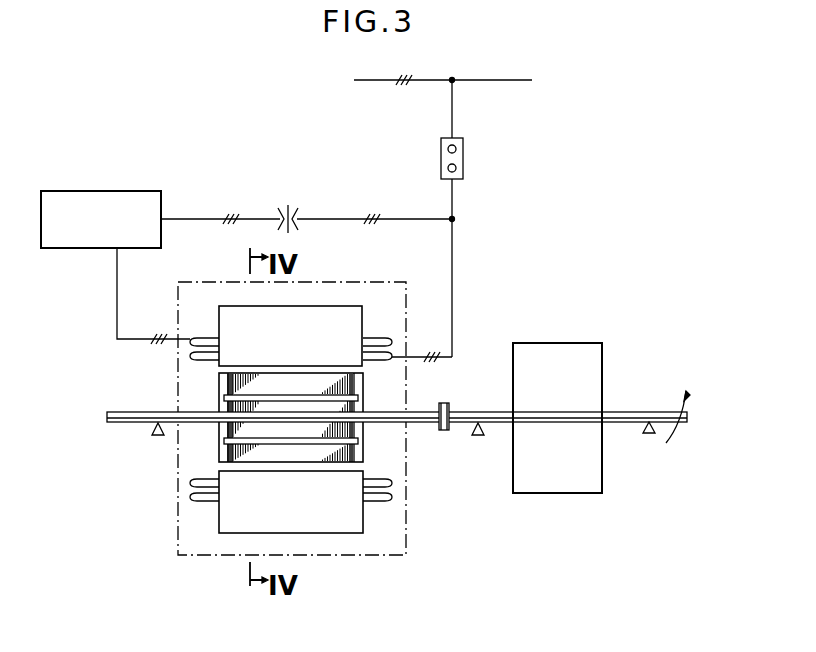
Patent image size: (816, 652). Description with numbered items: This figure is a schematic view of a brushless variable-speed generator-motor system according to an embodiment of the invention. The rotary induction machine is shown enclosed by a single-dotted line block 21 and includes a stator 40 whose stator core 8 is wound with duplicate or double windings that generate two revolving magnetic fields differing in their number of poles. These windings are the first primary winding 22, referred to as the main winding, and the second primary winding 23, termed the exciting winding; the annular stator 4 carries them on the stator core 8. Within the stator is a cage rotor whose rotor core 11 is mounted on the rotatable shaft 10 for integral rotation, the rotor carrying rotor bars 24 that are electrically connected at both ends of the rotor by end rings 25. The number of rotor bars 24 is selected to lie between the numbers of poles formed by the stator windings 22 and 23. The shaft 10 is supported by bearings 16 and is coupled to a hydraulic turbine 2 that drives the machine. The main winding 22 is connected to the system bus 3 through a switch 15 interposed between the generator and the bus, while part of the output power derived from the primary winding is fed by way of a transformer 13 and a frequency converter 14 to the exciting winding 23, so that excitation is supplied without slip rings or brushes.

The hydraulic turbine 2 is at (547, 343).
The system bus 3 is at (484, 80).
The stator 4 is at (222, 306).
The stator core 8 is at (317, 314).
The rotatable shaft 10 is at (462, 428).
The rotor core 11 is at (308, 452).
The transformer 13 is at (290, 203).
The frequency converter 14 is at (134, 191).
The switch 15 is at (463, 162).
The bearings 16 is at (649, 433).
The single-dotted line block 21 is at (212, 557).
The first primary winding 22 is at (392, 356).
The second primary winding 23 is at (384, 340).
The rotor bars 24 is at (320, 440).
The end rings 25 is at (222, 430).
The stator 40 is at (354, 306).